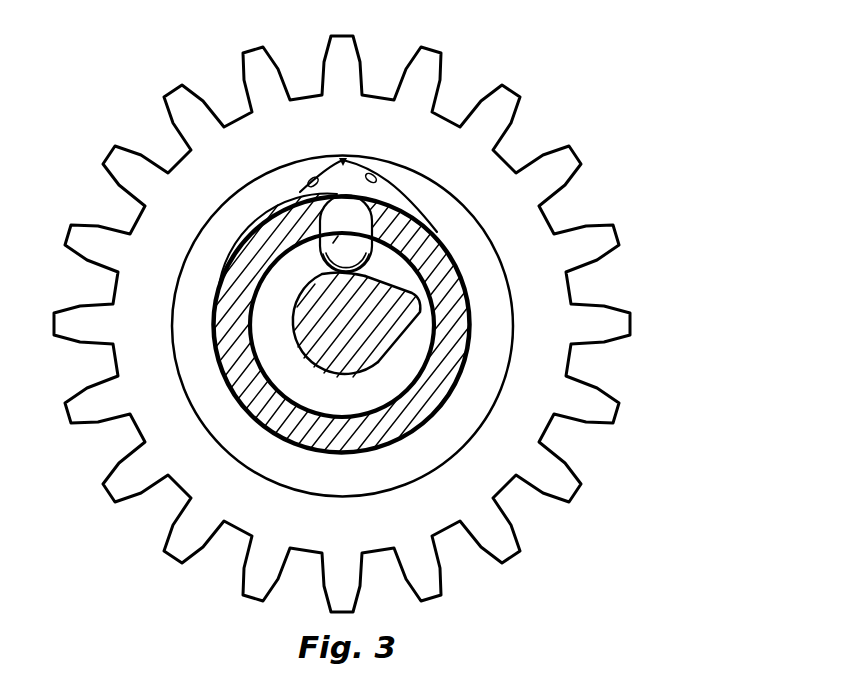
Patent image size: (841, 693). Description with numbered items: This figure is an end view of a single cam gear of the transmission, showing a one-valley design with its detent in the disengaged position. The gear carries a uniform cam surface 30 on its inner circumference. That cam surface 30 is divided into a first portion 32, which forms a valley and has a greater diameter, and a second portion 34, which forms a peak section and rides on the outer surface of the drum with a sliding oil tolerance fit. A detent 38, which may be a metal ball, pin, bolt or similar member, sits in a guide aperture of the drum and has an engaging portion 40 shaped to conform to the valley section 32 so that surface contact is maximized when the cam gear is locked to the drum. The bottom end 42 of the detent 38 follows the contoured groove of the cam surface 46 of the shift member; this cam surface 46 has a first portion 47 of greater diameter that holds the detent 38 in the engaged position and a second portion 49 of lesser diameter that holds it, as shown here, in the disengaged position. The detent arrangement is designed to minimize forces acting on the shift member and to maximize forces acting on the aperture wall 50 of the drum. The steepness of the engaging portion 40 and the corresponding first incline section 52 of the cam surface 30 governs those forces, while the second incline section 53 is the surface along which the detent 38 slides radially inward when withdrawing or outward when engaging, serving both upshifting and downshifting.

The cam surface 30 is at (215, 308).
The first portion 32 is at (343, 158).
The second portion 34 is at (471, 330).
The detent 38 is at (333, 243).
The engaging portion 40 is at (284, 203).
The bottom end 42 is at (433, 233).
The cam surface 46 is at (387, 340).
The first portion 47 is at (428, 306).
The second portion 49 is at (300, 348).
The aperture wall 50 is at (332, 155).
The first incline section 52 is at (375, 180).
The second incline section 53 is at (313, 182).